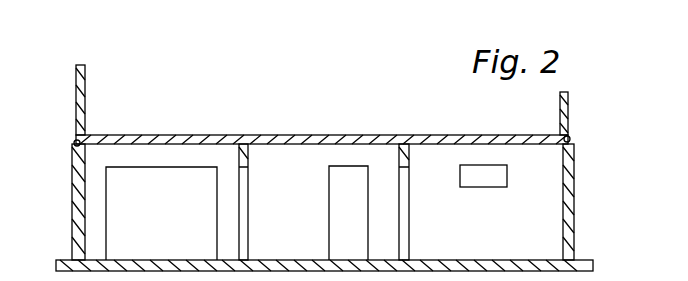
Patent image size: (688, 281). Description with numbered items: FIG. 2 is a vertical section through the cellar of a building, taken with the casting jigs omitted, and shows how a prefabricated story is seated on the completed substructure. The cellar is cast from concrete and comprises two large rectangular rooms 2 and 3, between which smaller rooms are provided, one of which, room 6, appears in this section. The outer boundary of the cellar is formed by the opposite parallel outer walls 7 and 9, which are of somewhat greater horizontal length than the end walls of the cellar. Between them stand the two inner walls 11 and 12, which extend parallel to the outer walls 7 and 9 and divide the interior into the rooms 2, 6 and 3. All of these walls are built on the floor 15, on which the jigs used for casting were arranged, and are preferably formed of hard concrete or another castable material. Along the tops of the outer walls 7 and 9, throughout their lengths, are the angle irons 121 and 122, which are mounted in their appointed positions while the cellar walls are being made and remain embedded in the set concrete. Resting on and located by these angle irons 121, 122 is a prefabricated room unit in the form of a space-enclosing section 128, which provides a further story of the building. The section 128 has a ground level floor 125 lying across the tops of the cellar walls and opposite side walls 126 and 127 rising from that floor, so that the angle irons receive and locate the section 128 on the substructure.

The room 2 is at (178, 216).
The room 3 is at (498, 225).
The room 6 is at (310, 224).
The outer wall 7 is at (72, 202).
The outer wall 9 is at (574, 212).
The inner wall 11 is at (248, 158).
The inner wall 12 is at (409, 158).
The floor 15 is at (593, 265).
The angle iron 121 is at (74, 143).
The angle iron 122 is at (570, 137).
The ground level floor 125 is at (279, 135).
The side wall 126 is at (86, 80).
The side wall 127 is at (569, 108).
The space-enclosing section 128 is at (427, 114).